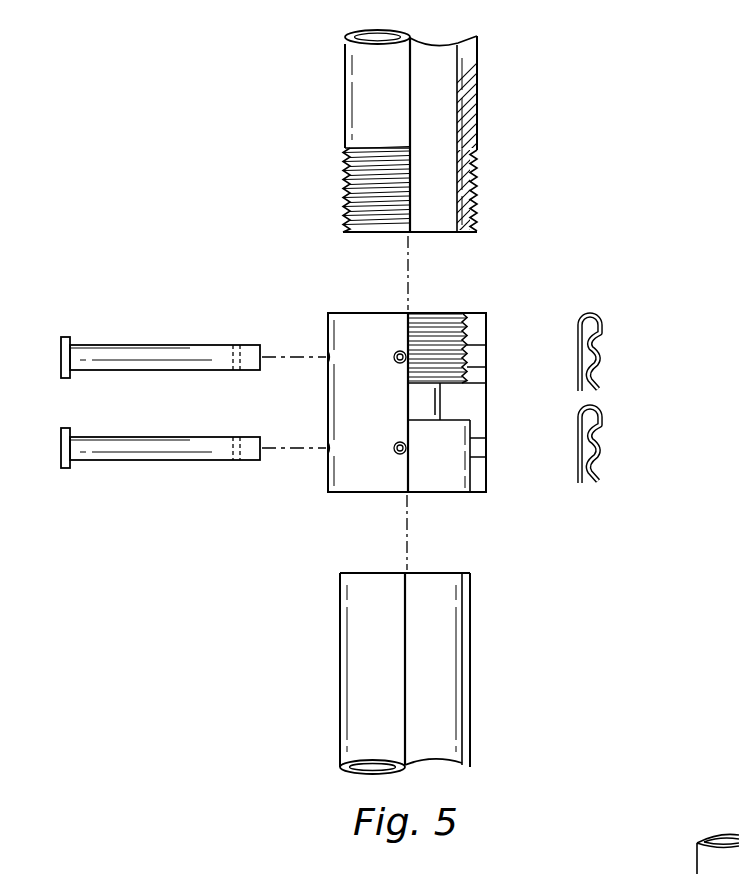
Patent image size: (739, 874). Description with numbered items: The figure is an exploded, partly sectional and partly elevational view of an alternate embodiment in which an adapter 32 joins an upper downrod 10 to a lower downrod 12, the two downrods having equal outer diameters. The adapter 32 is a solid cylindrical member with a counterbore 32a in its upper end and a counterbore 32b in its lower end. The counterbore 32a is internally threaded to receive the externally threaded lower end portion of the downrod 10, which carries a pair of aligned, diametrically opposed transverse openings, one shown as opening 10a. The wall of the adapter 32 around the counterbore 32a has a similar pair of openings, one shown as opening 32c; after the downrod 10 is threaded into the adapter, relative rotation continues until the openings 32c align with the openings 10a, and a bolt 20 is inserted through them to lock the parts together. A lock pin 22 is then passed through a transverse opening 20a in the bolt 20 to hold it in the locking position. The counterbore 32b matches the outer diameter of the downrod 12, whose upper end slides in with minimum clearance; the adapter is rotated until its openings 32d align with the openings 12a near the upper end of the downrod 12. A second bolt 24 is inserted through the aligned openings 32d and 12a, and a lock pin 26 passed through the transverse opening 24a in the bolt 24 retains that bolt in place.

The downrod 10 is at (345, 96).
The transverse opening 10a is at (477, 178).
The downrod 12 is at (340, 684).
The transverse opening 12a is at (468, 604).
The bolt 20 is at (150, 346).
The transverse opening 20a is at (226, 353).
The lock pin 22 is at (603, 322).
The bolt 24 is at (150, 460).
The transverse opening 24a is at (225, 460).
The lock pin 26 is at (603, 414).
The adapter 32 is at (356, 310).
The counterbore 32a is at (435, 330).
The counterbore 32b is at (468, 480).
The opening 32c is at (487, 360).
The opening 32d is at (487, 452).